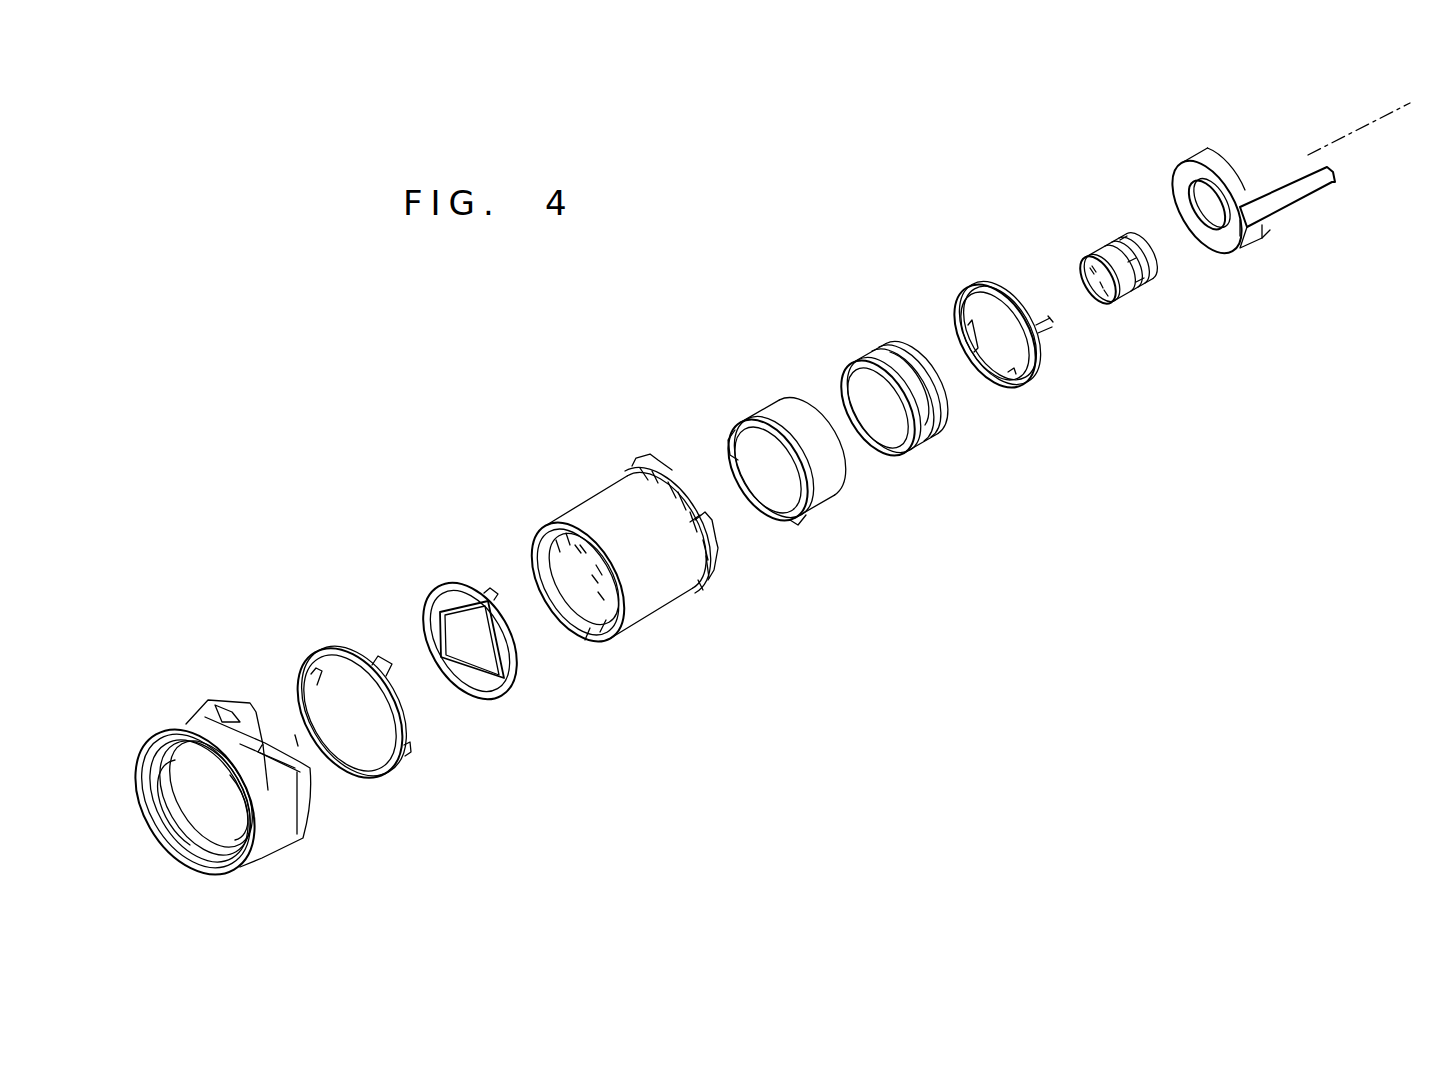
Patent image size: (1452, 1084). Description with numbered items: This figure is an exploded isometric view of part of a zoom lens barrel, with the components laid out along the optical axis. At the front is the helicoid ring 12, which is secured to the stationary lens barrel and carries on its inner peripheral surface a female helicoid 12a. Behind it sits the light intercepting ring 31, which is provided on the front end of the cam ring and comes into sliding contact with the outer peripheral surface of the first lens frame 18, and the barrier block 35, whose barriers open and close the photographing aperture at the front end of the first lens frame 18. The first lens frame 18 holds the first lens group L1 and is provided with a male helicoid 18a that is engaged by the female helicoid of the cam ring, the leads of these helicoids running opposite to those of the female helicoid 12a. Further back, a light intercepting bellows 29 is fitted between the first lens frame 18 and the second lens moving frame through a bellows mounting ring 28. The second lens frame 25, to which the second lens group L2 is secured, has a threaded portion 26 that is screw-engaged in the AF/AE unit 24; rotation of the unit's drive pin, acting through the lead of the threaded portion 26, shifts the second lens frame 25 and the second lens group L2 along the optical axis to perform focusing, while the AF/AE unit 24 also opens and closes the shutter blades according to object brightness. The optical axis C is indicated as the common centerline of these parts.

The helicoid ring 12 is at (263, 853).
The female helicoid 12a is at (203, 832).
The light intercepting ring 31 is at (388, 775).
The barrier block 35 is at (498, 700).
The first lens frame 18 is at (655, 612).
The male helicoid 18a is at (720, 570).
The first lens group L1 is at (582, 590).
The light intercepting bellows 29 is at (917, 442).
The bellows mounting ring 28 is at (1030, 380).
The second lens frame 25 is at (1103, 252).
The threaded portion 26 is at (1148, 283).
The second lens group L2 is at (1097, 295).
The AF/AE unit 24 is at (1247, 173).
The optical axis / centerline C is at (1371, 117).